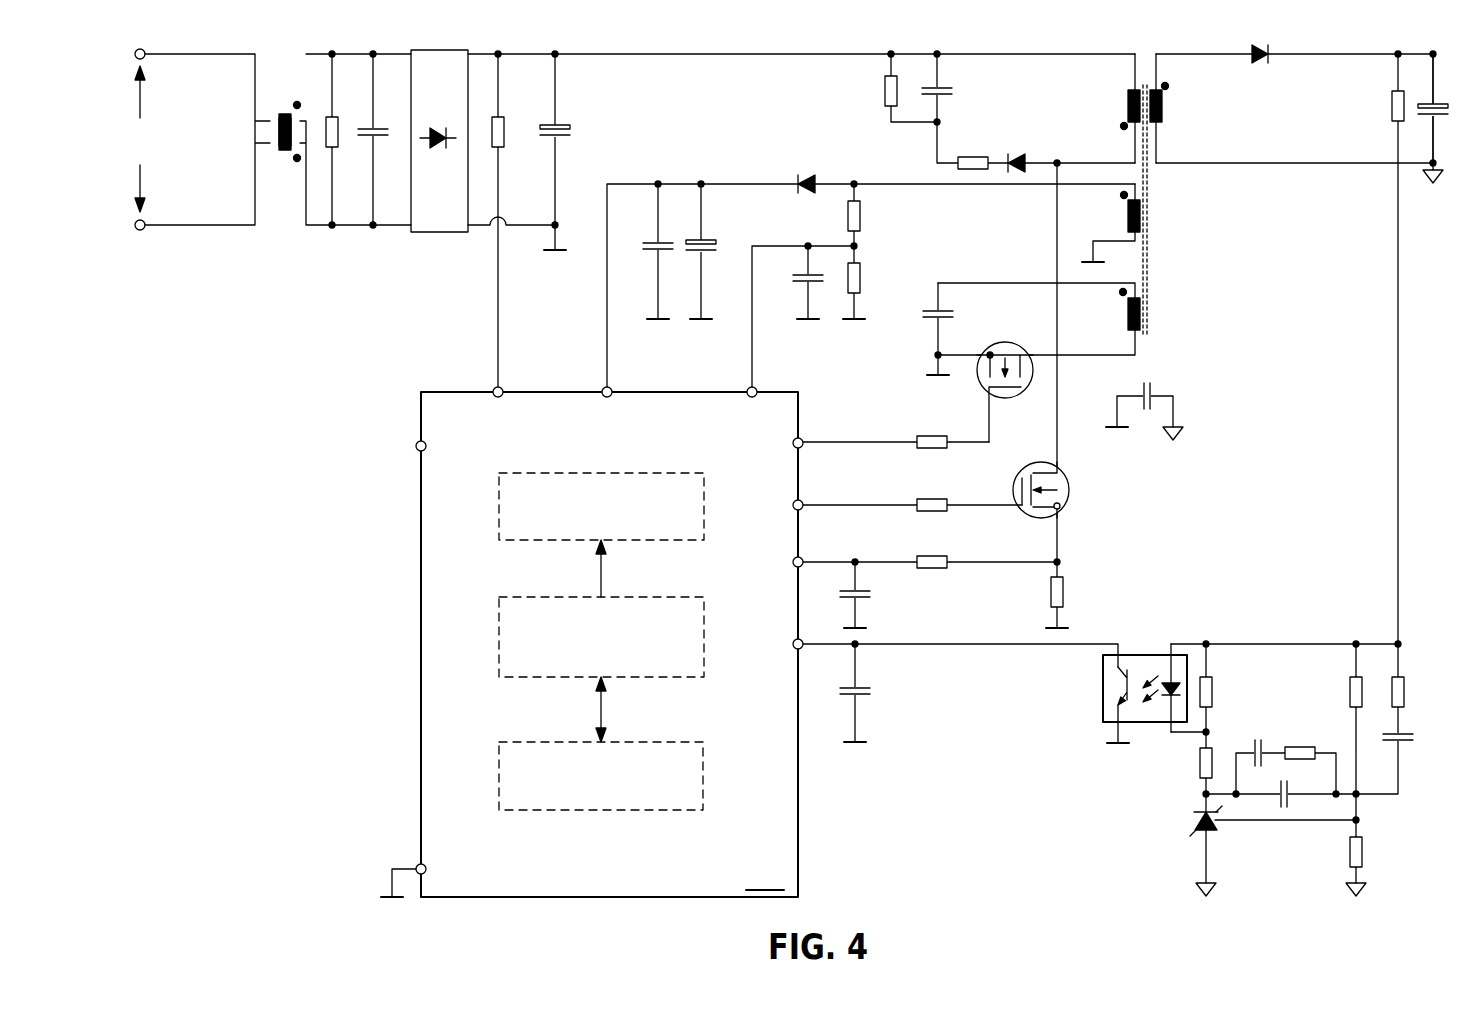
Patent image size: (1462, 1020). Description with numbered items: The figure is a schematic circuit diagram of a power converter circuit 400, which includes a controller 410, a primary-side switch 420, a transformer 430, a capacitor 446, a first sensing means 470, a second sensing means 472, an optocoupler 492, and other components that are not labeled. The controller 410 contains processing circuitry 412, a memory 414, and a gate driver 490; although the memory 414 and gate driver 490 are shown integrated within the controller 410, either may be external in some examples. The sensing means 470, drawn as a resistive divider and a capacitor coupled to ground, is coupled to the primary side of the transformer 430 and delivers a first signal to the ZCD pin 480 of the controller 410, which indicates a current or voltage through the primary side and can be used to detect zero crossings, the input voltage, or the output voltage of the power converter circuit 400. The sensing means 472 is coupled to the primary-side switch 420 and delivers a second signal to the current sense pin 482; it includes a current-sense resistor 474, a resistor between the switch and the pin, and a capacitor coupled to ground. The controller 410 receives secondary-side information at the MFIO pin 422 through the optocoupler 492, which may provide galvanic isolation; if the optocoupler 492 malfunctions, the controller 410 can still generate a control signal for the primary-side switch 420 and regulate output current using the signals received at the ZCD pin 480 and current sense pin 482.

The power converter circuit 400 is at (240, 586).
The controller 410 is at (627, 624).
The processing circuitry 412 is at (586, 667).
The memory 414 is at (586, 797).
The primary-side switch 420 is at (1068, 478).
The MFIO pin 422 is at (797, 640).
The transformer 430 is at (1260, 265).
The capacitor 446 is at (562, 126).
The sensing means 470 is at (888, 259).
The sensing means 472 is at (1108, 564).
The current-sense resistor 474 is at (1050, 597).
The ZCD pin 480 is at (749, 386).
The current sense pin 482 is at (803, 558).
The gate driver 490 is at (586, 526).
The optocoupler 492 is at (1106, 723).